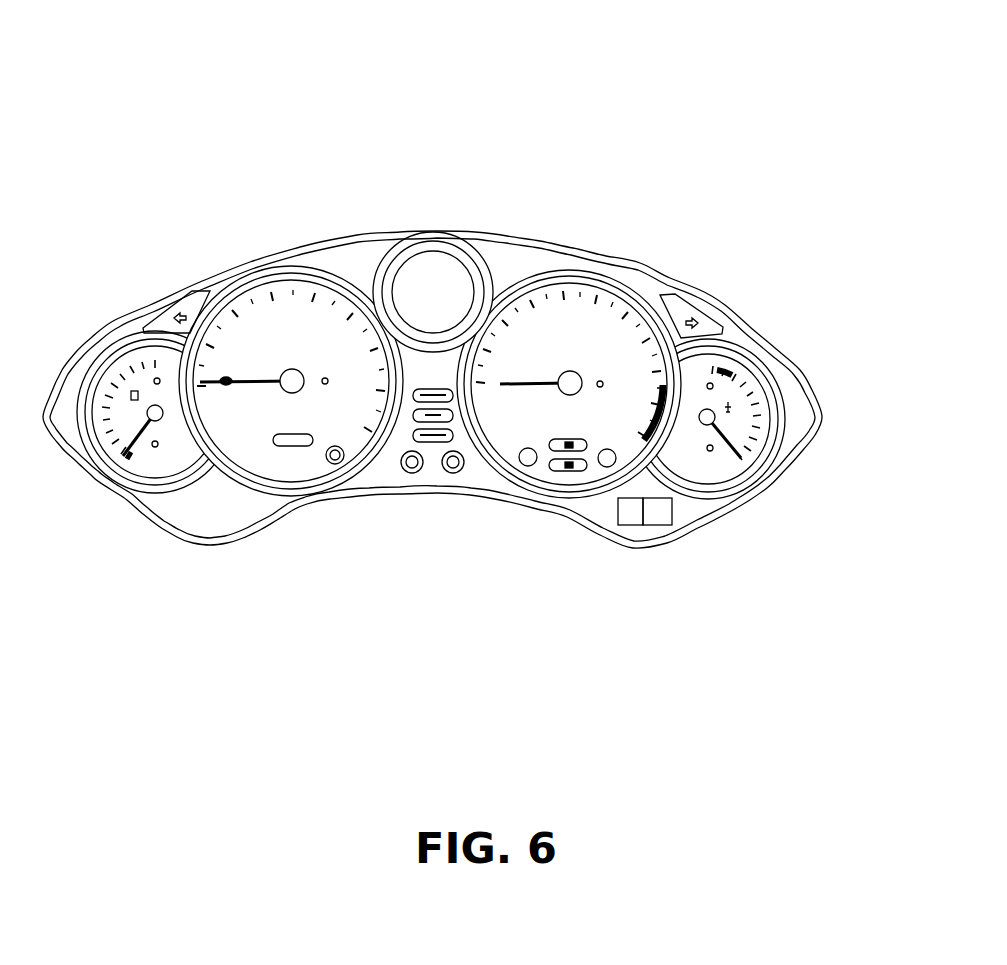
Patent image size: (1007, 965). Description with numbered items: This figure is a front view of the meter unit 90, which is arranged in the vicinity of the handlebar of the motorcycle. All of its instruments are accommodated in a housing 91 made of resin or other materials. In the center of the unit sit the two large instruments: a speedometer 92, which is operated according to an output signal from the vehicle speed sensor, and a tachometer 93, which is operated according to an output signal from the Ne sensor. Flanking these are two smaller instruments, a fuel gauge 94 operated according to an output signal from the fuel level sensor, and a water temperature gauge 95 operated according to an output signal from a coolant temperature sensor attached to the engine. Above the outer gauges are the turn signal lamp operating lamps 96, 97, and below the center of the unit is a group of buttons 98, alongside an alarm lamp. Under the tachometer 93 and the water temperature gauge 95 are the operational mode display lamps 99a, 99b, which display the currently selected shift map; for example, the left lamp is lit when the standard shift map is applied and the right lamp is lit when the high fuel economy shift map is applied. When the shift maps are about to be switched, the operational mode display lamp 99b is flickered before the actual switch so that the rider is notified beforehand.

The meter unit 90 is at (463, 138).
The housing 91 is at (527, 257).
The speedometer 92 is at (308, 470).
The tachometer 93 is at (542, 473).
The fuel gauge 94 is at (142, 473).
The water temperature gauge 95 is at (723, 475).
The turn signal lamp operating lamp 96 is at (193, 298).
The turn signal lamp operating lamp 97 is at (678, 308).
The group of buttons 98 is at (472, 500).
The operational mode display lamp 99a is at (607, 522).
The operational mode display lamp 99b is at (673, 515).